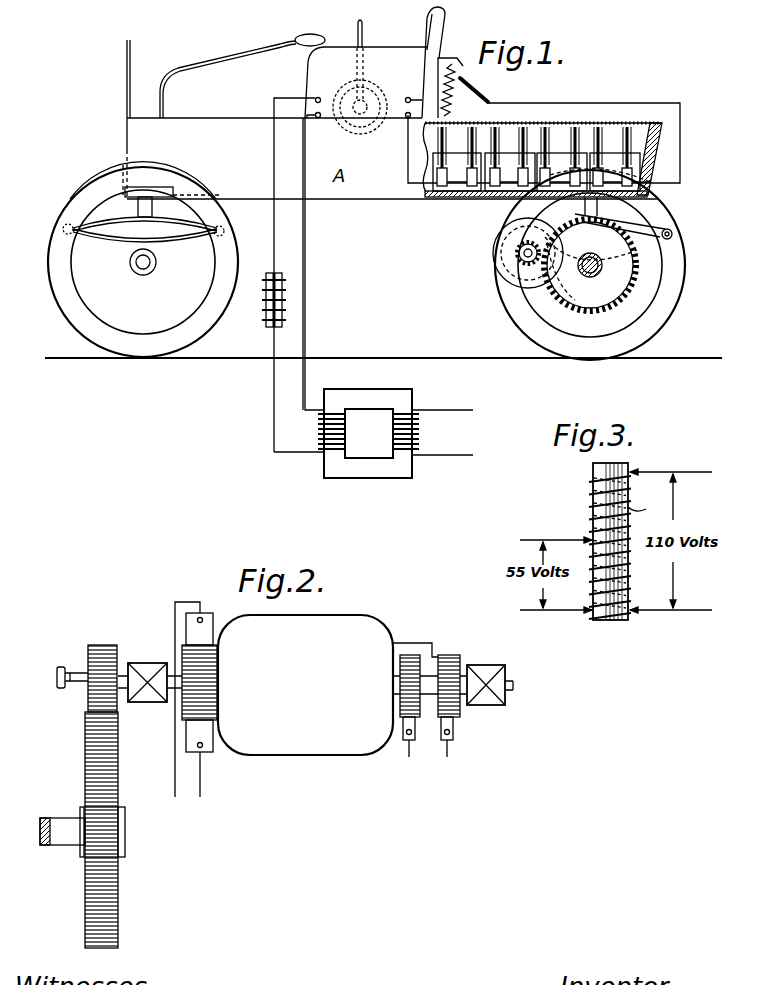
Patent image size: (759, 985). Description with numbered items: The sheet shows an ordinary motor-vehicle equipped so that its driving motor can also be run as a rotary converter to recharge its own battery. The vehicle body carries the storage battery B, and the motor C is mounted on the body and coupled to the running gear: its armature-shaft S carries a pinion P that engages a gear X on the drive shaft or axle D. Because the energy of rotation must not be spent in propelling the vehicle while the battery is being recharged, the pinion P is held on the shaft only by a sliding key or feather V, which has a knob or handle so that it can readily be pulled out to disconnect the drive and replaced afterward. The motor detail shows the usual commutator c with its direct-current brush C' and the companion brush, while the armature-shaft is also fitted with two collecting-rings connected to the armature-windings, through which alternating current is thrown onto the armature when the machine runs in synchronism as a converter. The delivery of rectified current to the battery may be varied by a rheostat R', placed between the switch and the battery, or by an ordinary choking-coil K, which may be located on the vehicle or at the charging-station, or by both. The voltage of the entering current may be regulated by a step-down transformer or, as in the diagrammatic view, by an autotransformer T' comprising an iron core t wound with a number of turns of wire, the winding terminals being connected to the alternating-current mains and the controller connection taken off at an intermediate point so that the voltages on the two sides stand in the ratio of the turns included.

In FIG. 1, the storage battery B is at (555, 135).
In FIG. 1, the rheostat R' is at (463, 76).
In FIG. 1, the motor C is at (512, 253).
In FIG. 2, the motor C is at (305, 685).
In FIG. 1, the armature-shaft S is at (519, 257).
In FIG. 2, the armature-shaft S is at (128, 672).
In FIG. 1, the pinion P is at (527, 265).
In FIG. 2, the pinion P is at (102, 652).
In FIG. 1, the gear X is at (548, 301).
In FIG. 2, the gear X is at (92, 765).
In FIG. 1, the drive shaft or axle D is at (590, 278).
In FIG. 2, the drive shaft or axle D is at (62, 825).
In FIG. 1, the choking-coil K is at (263, 304).
In FIG. 1, the autotransformer T' is at (395, 422).
In FIG. 3, the autotransformer T' is at (616, 541).
In FIG. 3, the iron core t is at (641, 505).
In FIG. 2, the sliding key or feather V is at (77, 670).
In FIG. 2, the commutator c is at (192, 700).
In FIG. 2, the direct-current brush C' is at (203, 696).